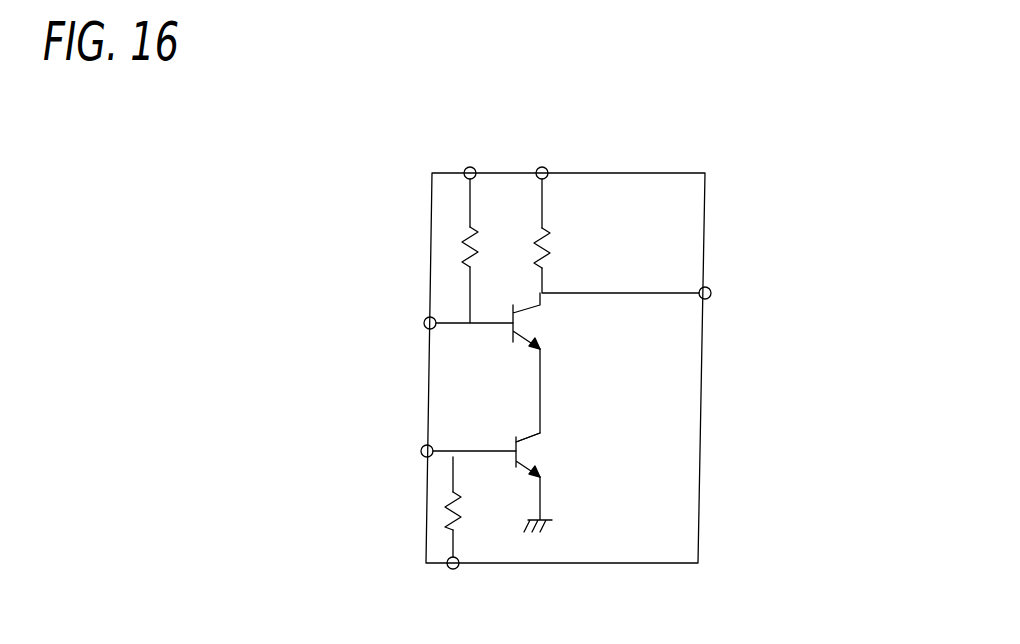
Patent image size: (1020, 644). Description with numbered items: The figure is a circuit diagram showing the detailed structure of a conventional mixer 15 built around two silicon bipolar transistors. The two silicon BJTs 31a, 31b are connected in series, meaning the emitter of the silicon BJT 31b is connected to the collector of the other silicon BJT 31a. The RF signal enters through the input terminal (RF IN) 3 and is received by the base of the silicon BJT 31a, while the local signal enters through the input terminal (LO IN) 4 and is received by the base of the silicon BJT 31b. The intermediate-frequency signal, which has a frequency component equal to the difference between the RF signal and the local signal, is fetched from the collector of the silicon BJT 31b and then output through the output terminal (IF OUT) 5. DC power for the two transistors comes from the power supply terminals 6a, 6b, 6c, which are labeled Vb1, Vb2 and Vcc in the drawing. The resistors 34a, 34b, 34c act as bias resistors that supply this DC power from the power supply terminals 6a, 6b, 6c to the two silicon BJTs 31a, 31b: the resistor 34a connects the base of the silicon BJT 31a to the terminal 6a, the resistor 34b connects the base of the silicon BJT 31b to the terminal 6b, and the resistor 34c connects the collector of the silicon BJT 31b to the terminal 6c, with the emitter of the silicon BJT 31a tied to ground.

The input terminal (RF IN) 3 is at (424, 456).
The input terminal (LO IN) 4 is at (427, 318).
The output terminal (IF OUT) 5 is at (708, 298).
The power supply terminal 6a is at (458, 568).
The power supply terminal 6b is at (465, 168).
The power supply terminal 6c is at (548, 167).
The mixer 15 is at (700, 486).
The silicon BJT 31a is at (538, 455).
The silicon BJT 31b is at (542, 327).
The resistor 34a is at (458, 497).
The resistor 34b is at (472, 238).
The resistor 34c is at (548, 240).